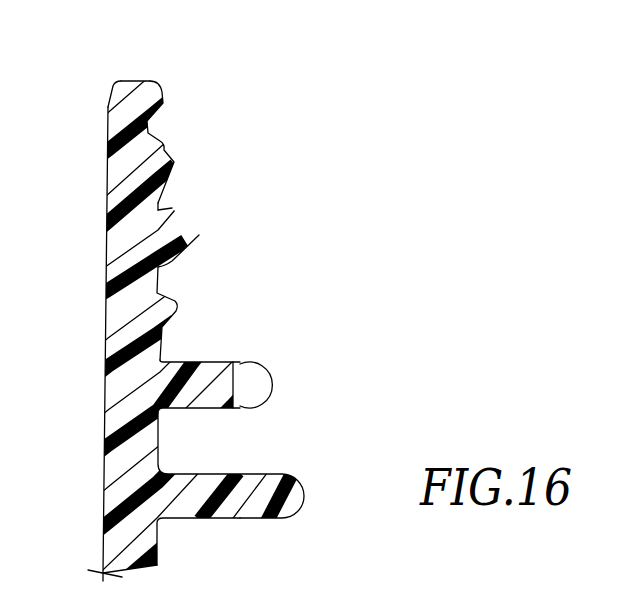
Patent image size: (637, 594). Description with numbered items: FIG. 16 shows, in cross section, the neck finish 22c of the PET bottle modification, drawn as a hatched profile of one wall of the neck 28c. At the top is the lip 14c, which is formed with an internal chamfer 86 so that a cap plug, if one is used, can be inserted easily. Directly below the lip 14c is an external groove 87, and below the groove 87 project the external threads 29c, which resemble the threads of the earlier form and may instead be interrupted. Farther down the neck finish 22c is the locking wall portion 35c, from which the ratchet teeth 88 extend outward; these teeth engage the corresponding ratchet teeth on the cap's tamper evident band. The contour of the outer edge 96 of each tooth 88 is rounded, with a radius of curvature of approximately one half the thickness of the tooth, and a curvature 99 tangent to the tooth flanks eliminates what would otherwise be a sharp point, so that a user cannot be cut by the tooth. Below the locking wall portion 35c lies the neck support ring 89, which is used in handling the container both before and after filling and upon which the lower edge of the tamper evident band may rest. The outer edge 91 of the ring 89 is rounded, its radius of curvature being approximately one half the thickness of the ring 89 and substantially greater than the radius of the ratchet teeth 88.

The neck finish 22c is at (88, 181).
The internal chamfer 86 is at (110, 92).
The lip 14c is at (137, 80).
The neck 28c is at (163, 97).
The external groove 87 is at (147, 125).
The external threads 29c is at (172, 208).
The locking wall portion 35c is at (198, 362).
The ratchet teeth 88 is at (228, 377).
The outer edge of tooth 96 is at (274, 382).
The curvature 99 is at (248, 391).
The rounded outer edge of ring 91 is at (305, 497).
The neck support ring 89 is at (247, 507).